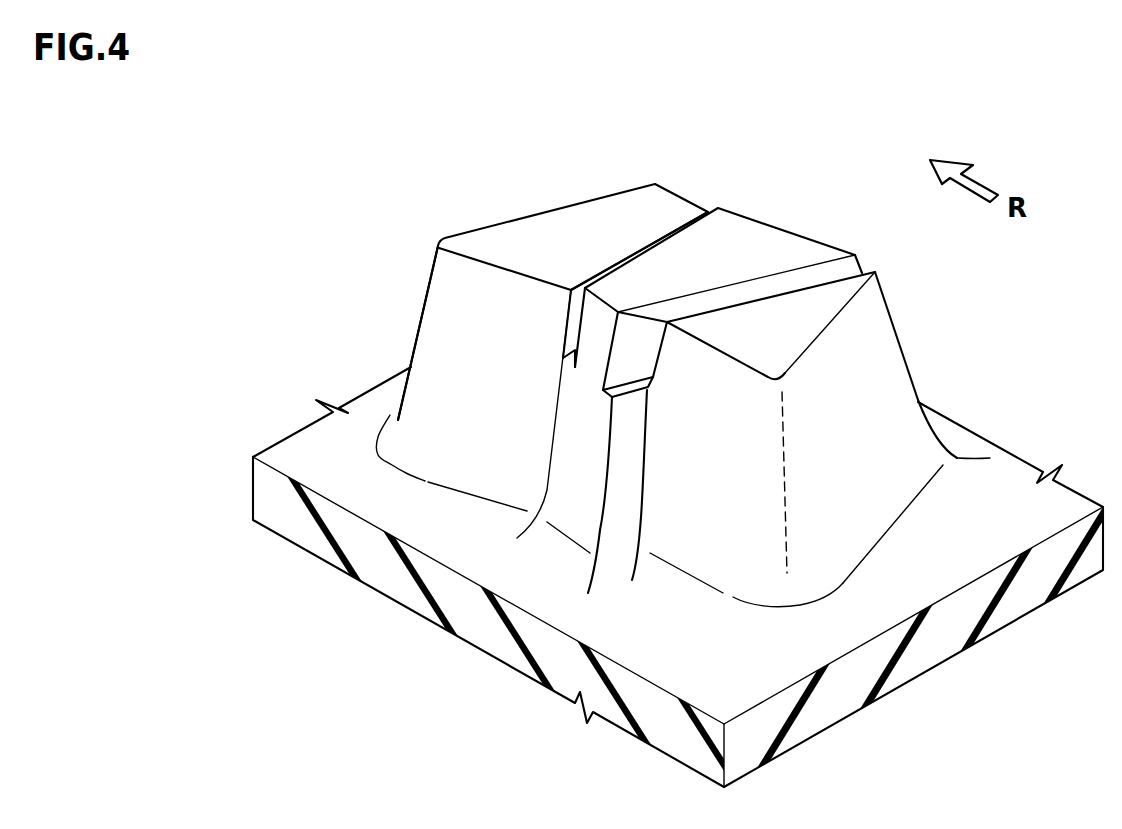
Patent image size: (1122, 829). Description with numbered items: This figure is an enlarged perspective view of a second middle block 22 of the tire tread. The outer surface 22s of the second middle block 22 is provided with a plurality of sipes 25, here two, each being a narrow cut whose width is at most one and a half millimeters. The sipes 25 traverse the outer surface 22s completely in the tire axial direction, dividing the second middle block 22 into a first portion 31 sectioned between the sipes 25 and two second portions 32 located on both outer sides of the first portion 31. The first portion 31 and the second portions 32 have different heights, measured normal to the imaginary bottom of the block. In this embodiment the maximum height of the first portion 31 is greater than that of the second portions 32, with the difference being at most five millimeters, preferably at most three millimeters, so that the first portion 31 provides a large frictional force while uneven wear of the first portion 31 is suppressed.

The second middle block 22 is at (507, 168).
The outer surface of second middle block 22s is at (587, 230).
The sipe 25 is at (575, 318).
The first portion 31 is at (757, 252).
The second portion 32 is at (498, 250).